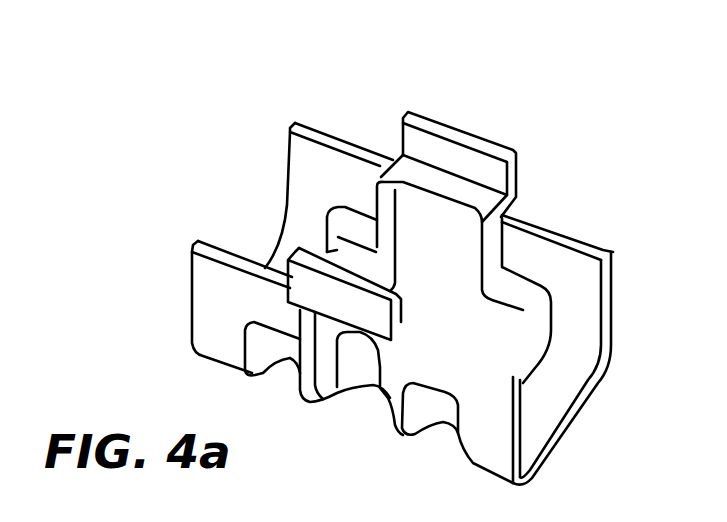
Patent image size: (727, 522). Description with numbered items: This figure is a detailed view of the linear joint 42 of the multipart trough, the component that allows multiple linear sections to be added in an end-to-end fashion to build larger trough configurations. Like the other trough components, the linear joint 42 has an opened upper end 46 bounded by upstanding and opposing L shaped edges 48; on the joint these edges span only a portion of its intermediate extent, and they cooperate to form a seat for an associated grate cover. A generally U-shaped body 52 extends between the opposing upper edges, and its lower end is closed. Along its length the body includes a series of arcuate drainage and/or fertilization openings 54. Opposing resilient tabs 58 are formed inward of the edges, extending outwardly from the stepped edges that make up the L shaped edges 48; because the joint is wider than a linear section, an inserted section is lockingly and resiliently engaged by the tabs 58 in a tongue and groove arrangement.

The linear joint 42 is at (518, 86).
The opened upper end 46 is at (193, 138).
The L shaped edges 48 is at (522, 162).
The U-shaped body 52 is at (325, 157).
The arcuate drainage openings 54 is at (297, 393).
The resilient tabs 58 is at (327, 251).